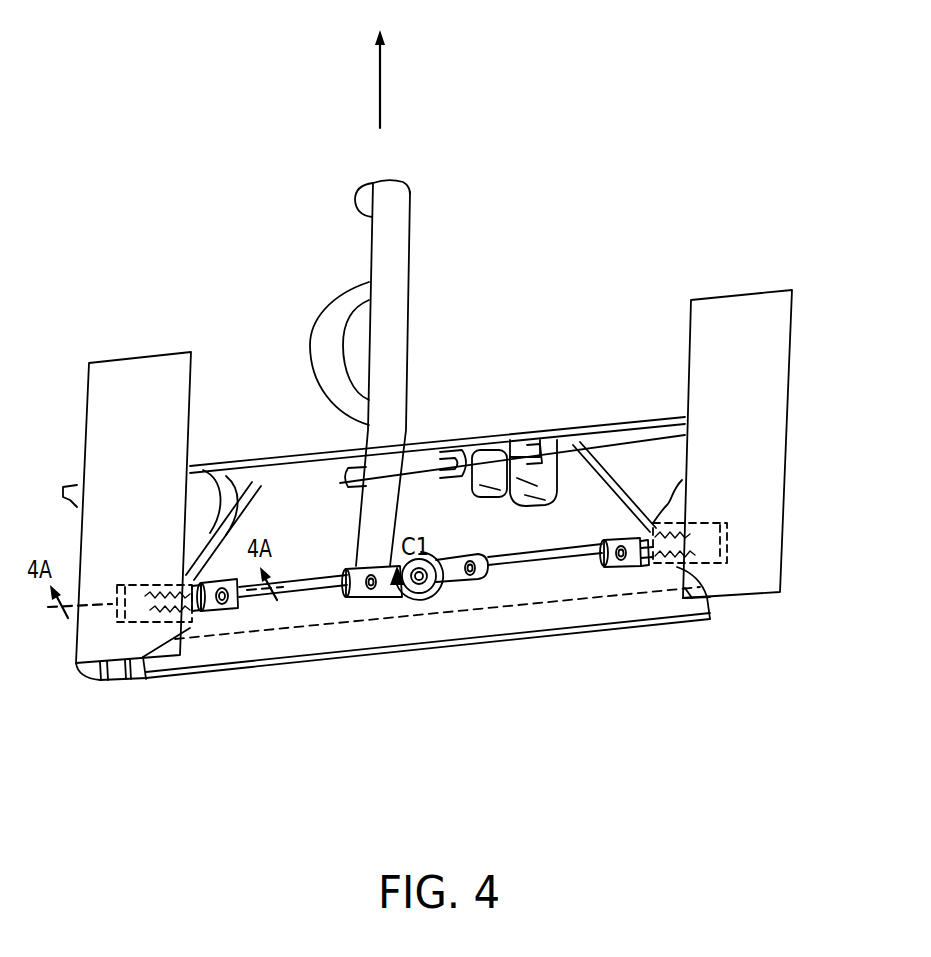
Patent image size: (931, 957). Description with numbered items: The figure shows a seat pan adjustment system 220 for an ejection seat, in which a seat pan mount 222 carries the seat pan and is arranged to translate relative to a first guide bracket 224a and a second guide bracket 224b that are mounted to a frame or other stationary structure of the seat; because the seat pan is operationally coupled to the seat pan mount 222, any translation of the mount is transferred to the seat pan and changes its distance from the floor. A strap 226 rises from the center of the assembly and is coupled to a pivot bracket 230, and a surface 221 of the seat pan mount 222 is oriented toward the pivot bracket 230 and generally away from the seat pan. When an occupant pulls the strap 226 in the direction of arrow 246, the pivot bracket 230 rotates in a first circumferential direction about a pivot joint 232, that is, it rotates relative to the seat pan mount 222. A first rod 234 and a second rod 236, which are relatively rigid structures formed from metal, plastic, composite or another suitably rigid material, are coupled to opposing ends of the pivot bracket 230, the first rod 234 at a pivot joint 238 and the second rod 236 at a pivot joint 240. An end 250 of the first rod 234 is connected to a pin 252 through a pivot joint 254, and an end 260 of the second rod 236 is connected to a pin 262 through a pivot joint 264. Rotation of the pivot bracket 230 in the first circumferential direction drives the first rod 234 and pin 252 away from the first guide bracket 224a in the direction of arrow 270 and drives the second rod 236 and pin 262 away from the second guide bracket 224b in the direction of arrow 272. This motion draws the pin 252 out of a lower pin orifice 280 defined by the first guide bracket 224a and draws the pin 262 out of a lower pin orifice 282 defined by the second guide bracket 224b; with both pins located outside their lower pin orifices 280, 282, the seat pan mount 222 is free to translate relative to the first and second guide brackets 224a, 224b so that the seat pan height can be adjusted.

The seat pan adjustment system 220 is at (572, 120).
The surface 221 is at (459, 513).
The seat pan mount 222 is at (499, 442).
The first guide bracket 224a is at (148, 372).
The second guide bracket 224b is at (737, 337).
The strap 226 is at (340, 292).
The pivot bracket 230 is at (450, 583).
The pivot joint 232 is at (417, 590).
The first rod 234 is at (290, 588).
The second rod 236 is at (533, 563).
The pivot joint 238 is at (370, 587).
The pivot joint 240 is at (483, 577).
The arrow 246 is at (379, 97).
The end 250 is at (235, 600).
The pin 252 is at (185, 605).
The pivot joint 254 is at (222, 600).
The end 260 is at (617, 557).
The pin 262 is at (650, 567).
The pivot joint 264 is at (623, 567).
The arrow 270 is at (228, 524).
The arrow 272 is at (652, 478).
The lower pin orifice 280 is at (120, 585).
The lower pin orifice 282 is at (722, 563).